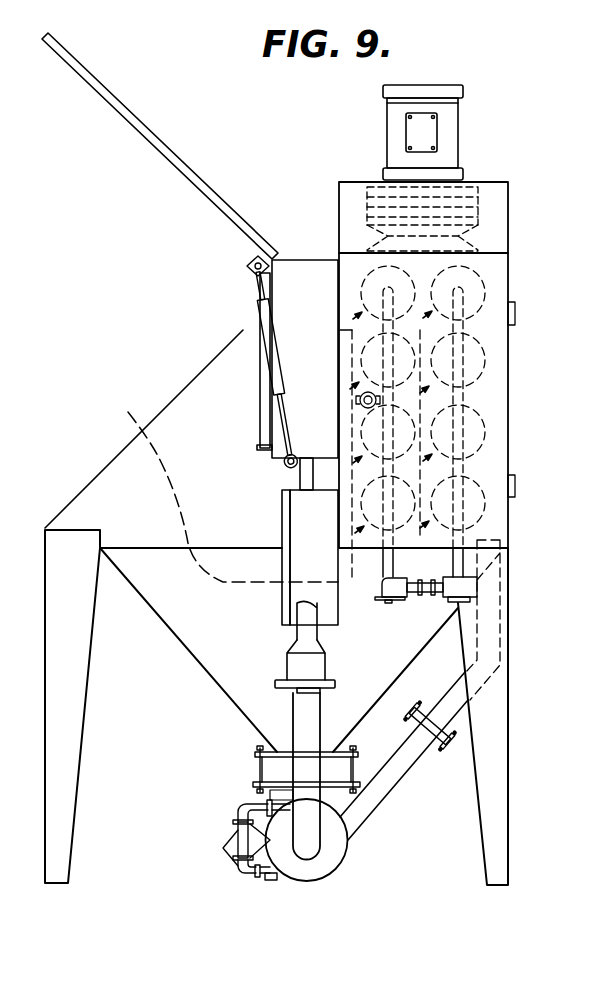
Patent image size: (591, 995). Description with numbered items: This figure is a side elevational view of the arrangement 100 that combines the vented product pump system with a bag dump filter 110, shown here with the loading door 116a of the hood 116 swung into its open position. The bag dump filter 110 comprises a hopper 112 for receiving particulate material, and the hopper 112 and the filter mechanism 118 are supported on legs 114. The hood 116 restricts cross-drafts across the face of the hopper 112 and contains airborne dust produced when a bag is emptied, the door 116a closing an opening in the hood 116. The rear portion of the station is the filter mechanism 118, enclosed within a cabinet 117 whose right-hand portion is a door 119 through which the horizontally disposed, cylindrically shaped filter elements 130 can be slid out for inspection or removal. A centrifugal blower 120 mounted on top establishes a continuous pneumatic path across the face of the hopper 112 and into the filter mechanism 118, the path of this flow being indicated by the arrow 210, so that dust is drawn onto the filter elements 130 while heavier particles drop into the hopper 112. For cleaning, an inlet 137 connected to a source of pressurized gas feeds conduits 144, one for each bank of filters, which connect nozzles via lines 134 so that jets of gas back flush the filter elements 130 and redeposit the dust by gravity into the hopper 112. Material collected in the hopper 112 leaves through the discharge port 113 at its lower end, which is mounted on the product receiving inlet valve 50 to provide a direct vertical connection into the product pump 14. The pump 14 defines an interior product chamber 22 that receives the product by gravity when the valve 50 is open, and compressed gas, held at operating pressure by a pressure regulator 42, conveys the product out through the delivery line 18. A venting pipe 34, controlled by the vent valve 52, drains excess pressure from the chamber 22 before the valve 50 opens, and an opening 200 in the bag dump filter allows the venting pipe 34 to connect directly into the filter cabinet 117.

The door 116a is at (147, 148).
The centrifugal blower 120 is at (482, 200).
The cabinet 117 is at (510, 278).
The filter mechanism 118 is at (432, 279).
The arrow 210 is at (350, 331).
The filter elements 130 is at (486, 352).
The conduits 144 is at (465, 392).
The arrangement 100 is at (528, 404).
The bag dump filter 110 is at (175, 385).
The hood 116 is at (110, 485).
The door 119 is at (488, 472).
The opening 200 is at (492, 540).
The lines 134 is at (453, 566).
The inlet 137 is at (467, 587).
The hopper 112 is at (179, 653).
The legs 114 is at (45, 717).
The venting pipe 34 is at (402, 781).
The vent valve 52 is at (418, 708).
The discharge port 113 is at (277, 752).
The product receiving inlet valve 50 is at (262, 767).
The product chamber 22 is at (292, 850).
The delivery line 18 is at (312, 828).
The product pump 14 is at (316, 889).
The pressure regulator 42 is at (223, 847).